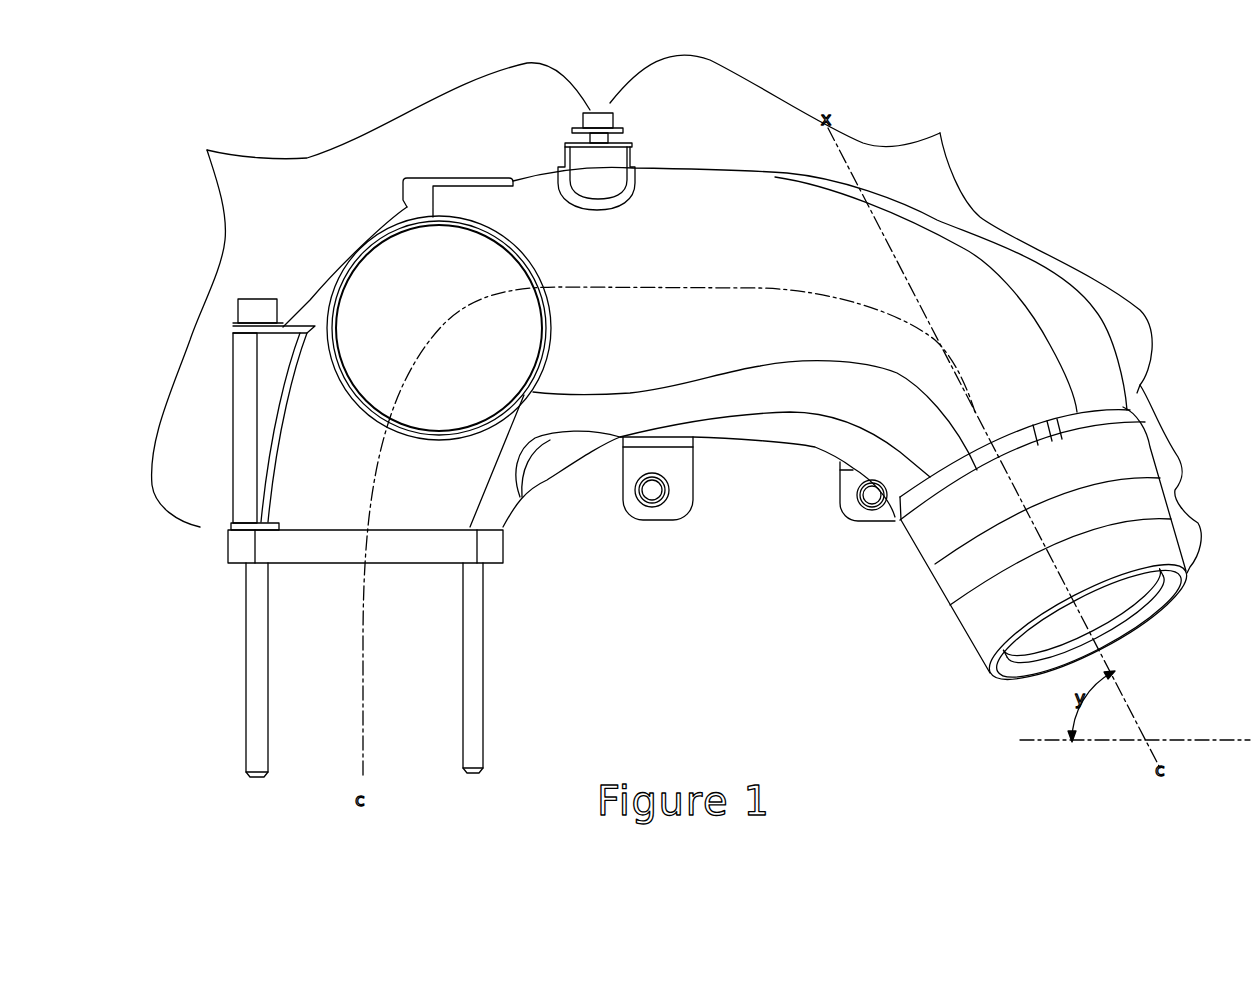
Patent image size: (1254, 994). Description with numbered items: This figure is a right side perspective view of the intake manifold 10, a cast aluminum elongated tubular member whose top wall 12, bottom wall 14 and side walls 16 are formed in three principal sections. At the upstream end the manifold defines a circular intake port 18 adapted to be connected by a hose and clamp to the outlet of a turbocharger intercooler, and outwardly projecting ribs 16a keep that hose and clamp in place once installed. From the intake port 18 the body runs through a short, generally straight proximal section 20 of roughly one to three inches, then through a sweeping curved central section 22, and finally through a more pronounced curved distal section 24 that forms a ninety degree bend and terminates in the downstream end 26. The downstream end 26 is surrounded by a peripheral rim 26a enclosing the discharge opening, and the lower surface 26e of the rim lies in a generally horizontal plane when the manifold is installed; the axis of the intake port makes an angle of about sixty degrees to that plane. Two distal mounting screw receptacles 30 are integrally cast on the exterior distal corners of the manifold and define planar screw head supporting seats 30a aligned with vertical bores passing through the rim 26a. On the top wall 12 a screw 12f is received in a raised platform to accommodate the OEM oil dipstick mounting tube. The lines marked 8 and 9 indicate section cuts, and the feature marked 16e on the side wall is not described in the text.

The section line 8- 8 is at (703, 660).
The section line 9- 9 is at (548, 633).
The intake manifold 10 is at (712, 540).
The top wall 12 is at (683, 166).
The screw 12f is at (598, 111).
The bottom wall 14 is at (818, 455).
The side walls 16 is at (838, 258).
The outwardly projecting ribs 16a is at (1052, 650).
The port ring 16e is at (439, 328).
The circular intake port 18 is at (1172, 612).
The proximal section 20 is at (1058, 529).
The central section 22 is at (881, 224).
The distal section 24 is at (371, 295).
The downstream end 26 is at (350, 577).
The peripheral rim 26a is at (316, 545).
The lower surface of the rim 26e is at (413, 567).
The distal mounting screw receptacles 30 is at (233, 457).
The screw head supporting seats 30a is at (236, 315).